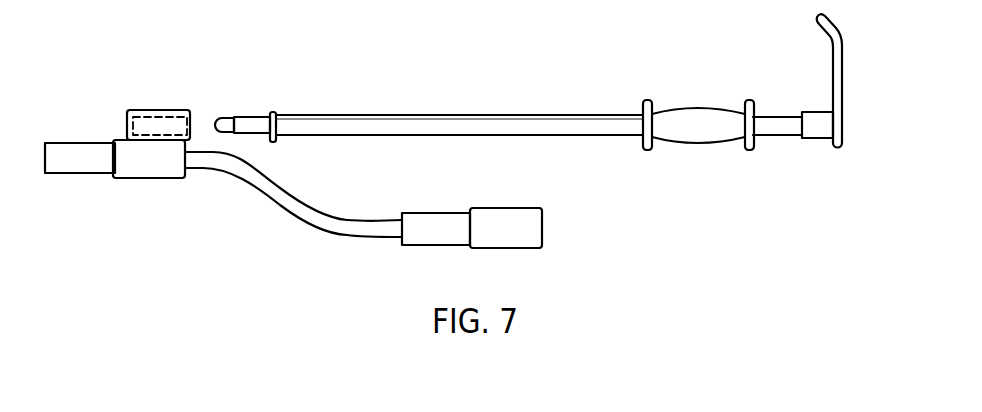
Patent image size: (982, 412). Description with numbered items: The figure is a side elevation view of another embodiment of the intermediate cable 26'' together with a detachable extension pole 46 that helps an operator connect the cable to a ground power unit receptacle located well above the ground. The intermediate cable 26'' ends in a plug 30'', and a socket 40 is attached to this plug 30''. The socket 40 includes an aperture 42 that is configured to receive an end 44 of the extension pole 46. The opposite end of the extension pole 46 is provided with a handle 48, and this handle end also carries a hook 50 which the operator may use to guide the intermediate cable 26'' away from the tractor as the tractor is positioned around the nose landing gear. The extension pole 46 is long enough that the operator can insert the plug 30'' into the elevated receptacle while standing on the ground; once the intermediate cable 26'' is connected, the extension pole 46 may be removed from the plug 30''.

The intermediate cable 26'' is at (363, 223).
The plug 30'' is at (115, 190).
The socket 40 is at (148, 110).
The aperture 42 is at (193, 122).
The end of extension pole 44 is at (247, 117).
The extension pole 46 is at (397, 115).
The handle 48 is at (693, 107).
The hook 50 is at (833, 23).